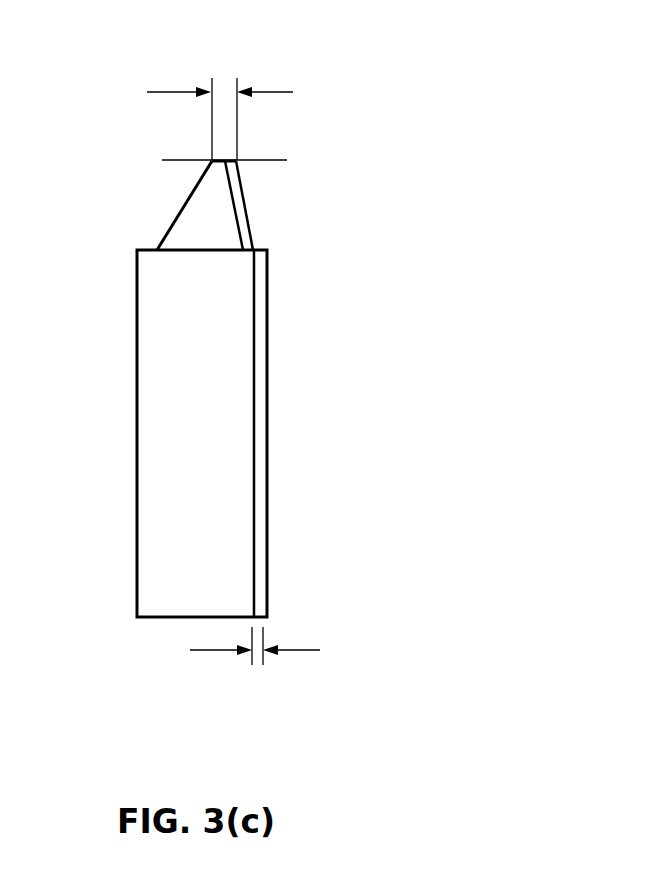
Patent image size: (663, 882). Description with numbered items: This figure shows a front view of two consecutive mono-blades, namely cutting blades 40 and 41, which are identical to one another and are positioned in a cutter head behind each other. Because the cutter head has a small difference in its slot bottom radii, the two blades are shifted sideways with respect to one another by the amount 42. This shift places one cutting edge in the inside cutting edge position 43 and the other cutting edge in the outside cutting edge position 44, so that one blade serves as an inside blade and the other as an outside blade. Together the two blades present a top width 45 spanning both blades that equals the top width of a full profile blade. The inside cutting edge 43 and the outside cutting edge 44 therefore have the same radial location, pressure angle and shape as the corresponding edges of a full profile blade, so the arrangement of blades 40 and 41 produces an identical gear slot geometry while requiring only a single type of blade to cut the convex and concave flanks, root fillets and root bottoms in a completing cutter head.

The cutting blade 40 is at (190, 352).
The cutting blade 41 is at (262, 370).
The sideways shift amount 42 is at (260, 642).
The inside cutting edge position 43 is at (183, 198).
The outside cutting edge position 44 is at (247, 200).
The top width 45 is at (222, 80).